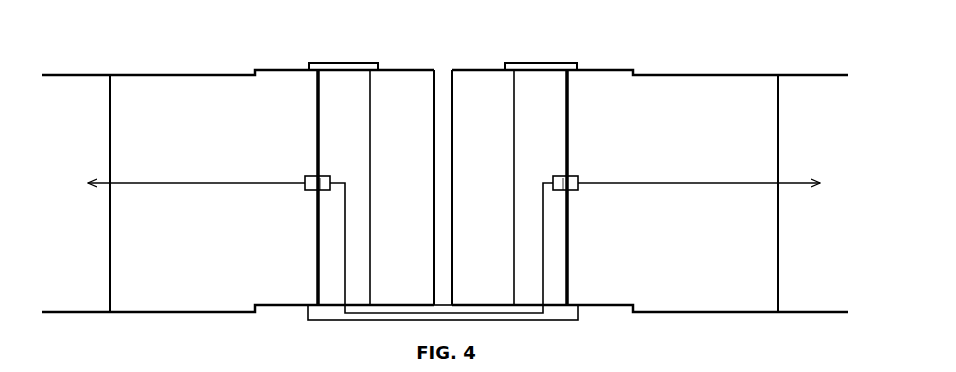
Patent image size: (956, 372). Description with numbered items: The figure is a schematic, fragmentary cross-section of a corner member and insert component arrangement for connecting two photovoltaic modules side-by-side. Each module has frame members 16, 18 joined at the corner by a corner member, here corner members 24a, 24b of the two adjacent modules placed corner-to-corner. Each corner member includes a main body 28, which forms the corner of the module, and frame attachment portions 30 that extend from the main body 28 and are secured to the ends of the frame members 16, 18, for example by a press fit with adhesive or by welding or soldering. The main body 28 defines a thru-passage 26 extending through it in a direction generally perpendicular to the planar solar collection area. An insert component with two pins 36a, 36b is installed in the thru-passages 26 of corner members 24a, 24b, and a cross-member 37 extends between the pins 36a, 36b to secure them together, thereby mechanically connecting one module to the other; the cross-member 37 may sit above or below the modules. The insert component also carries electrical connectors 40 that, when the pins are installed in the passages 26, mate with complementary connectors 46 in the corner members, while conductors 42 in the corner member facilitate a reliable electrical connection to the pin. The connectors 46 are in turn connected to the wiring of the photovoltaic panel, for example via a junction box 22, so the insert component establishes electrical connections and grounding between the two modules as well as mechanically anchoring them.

The frame member 16 is at (88, 72).
The frame member 18 is at (802, 70).
The junction box 22 is at (458, 183).
The corner member 24a is at (235, 70).
The corner member 24b is at (606, 58).
The thru-passage 26 is at (318, 142).
The main body 28 is at (398, 70).
The frame attachment portion 30 is at (110, 235).
The pin 36a is at (318, 222).
The pin 36b is at (570, 222).
The cross-member 37 is at (362, 320).
The electrical connector 40 is at (322, 177).
The conductor 42 is at (345, 250).
The connector 46 is at (305, 178).